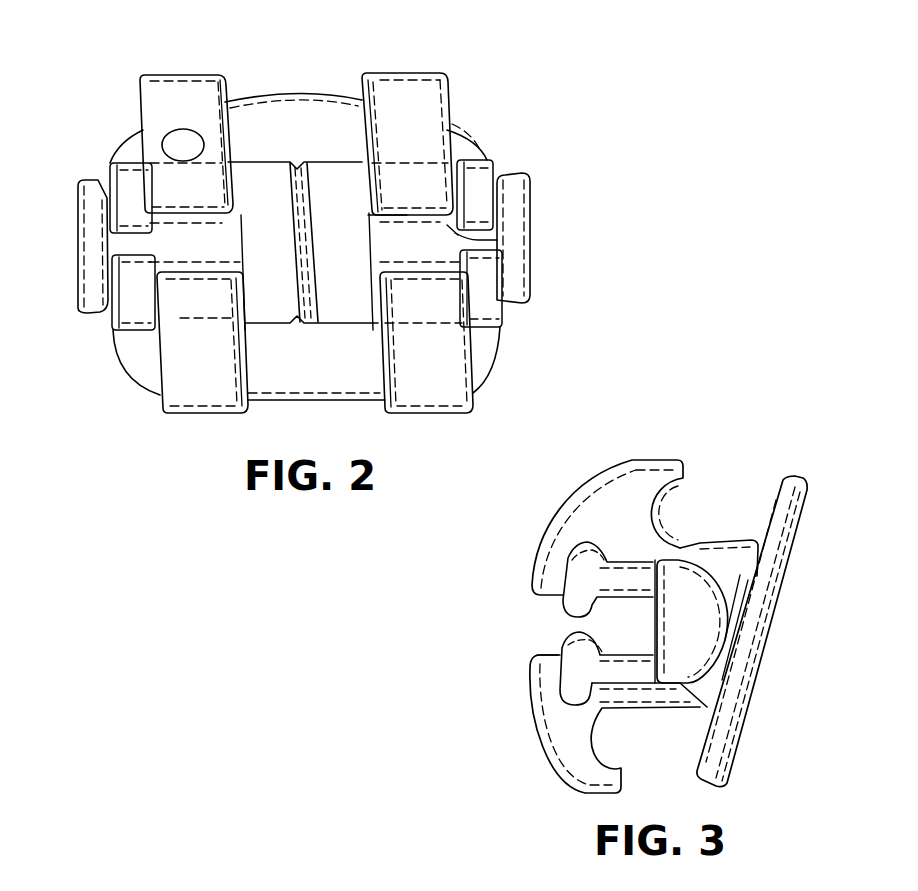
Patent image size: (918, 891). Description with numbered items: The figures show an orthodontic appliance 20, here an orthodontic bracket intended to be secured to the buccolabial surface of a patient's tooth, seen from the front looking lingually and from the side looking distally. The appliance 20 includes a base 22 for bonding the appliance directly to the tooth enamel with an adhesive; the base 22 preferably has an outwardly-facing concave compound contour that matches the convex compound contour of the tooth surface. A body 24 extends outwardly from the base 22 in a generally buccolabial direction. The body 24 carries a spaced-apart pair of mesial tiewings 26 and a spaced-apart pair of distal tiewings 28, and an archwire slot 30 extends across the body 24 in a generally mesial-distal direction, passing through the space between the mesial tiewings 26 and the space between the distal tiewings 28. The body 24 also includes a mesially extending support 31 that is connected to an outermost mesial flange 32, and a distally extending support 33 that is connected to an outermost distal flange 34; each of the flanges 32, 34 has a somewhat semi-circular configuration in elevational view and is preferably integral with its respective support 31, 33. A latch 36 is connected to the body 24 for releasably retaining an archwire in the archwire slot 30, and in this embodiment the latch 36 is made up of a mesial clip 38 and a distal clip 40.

In FIG. 2, the orthodontic appliance 20 is at (588, 173).
In FIG. 3, the orthodontic appliance 20 is at (468, 672).
In FIG. 3, the base 22 is at (745, 744).
In FIG. 2, the body 24 is at (261, 158).
In FIG. 3, the body 24 is at (686, 538).
In FIG. 2, the mesial tiewings 26 is at (412, 85).
In FIG. 3, the mesial tiewings 26 is at (645, 477).
In FIG. 2, the distal tiewings 28 is at (157, 92).
In FIG. 2, the archwire slot 30 is at (378, 226).
In FIG. 3, the archwire slot 30 is at (603, 656).
In FIG. 2, the mesially extending support 31 is at (475, 240).
In FIG. 2, the mesial flange 32 is at (517, 273).
In FIG. 3, the mesial flange 32 is at (703, 627).
In FIG. 2, the distally extending support 33 is at (130, 247).
In FIG. 2, the distal flange 34 is at (97, 290).
In FIG. 2, the latch 36 is at (512, 114).
In FIG. 3, the latch 36 is at (512, 612).
In FIG. 2, the mesial clip 38 is at (490, 158).
In FIG. 3, the mesial clip 38 is at (568, 554).
In FIG. 2, the distal clip 40 is at (126, 333).